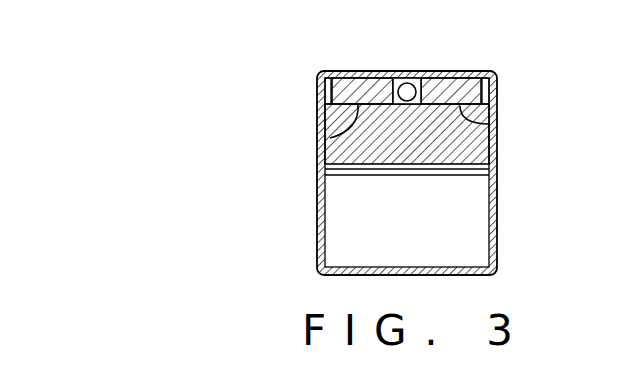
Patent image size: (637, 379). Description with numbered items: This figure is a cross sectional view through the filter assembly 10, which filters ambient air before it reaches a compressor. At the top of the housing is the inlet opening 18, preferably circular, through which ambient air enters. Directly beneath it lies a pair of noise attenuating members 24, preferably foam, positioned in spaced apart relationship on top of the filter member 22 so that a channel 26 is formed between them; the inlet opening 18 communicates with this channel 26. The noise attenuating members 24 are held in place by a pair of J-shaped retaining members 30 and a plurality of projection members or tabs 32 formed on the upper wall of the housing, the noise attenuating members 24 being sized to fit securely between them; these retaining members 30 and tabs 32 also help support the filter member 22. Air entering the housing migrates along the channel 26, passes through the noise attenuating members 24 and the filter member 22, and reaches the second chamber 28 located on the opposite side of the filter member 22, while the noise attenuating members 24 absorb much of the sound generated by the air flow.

The filter assembly 10 is at (177, 225).
The inlet opening 18 is at (413, 78).
The filter member 22 is at (490, 158).
The noise attenuating members 24 is at (330, 138).
The channel 26 is at (397, 77).
The second chamber 28 is at (433, 238).
The J-shaped retaining members 30 is at (327, 98).
The projection members or tabs 32 is at (383, 86).